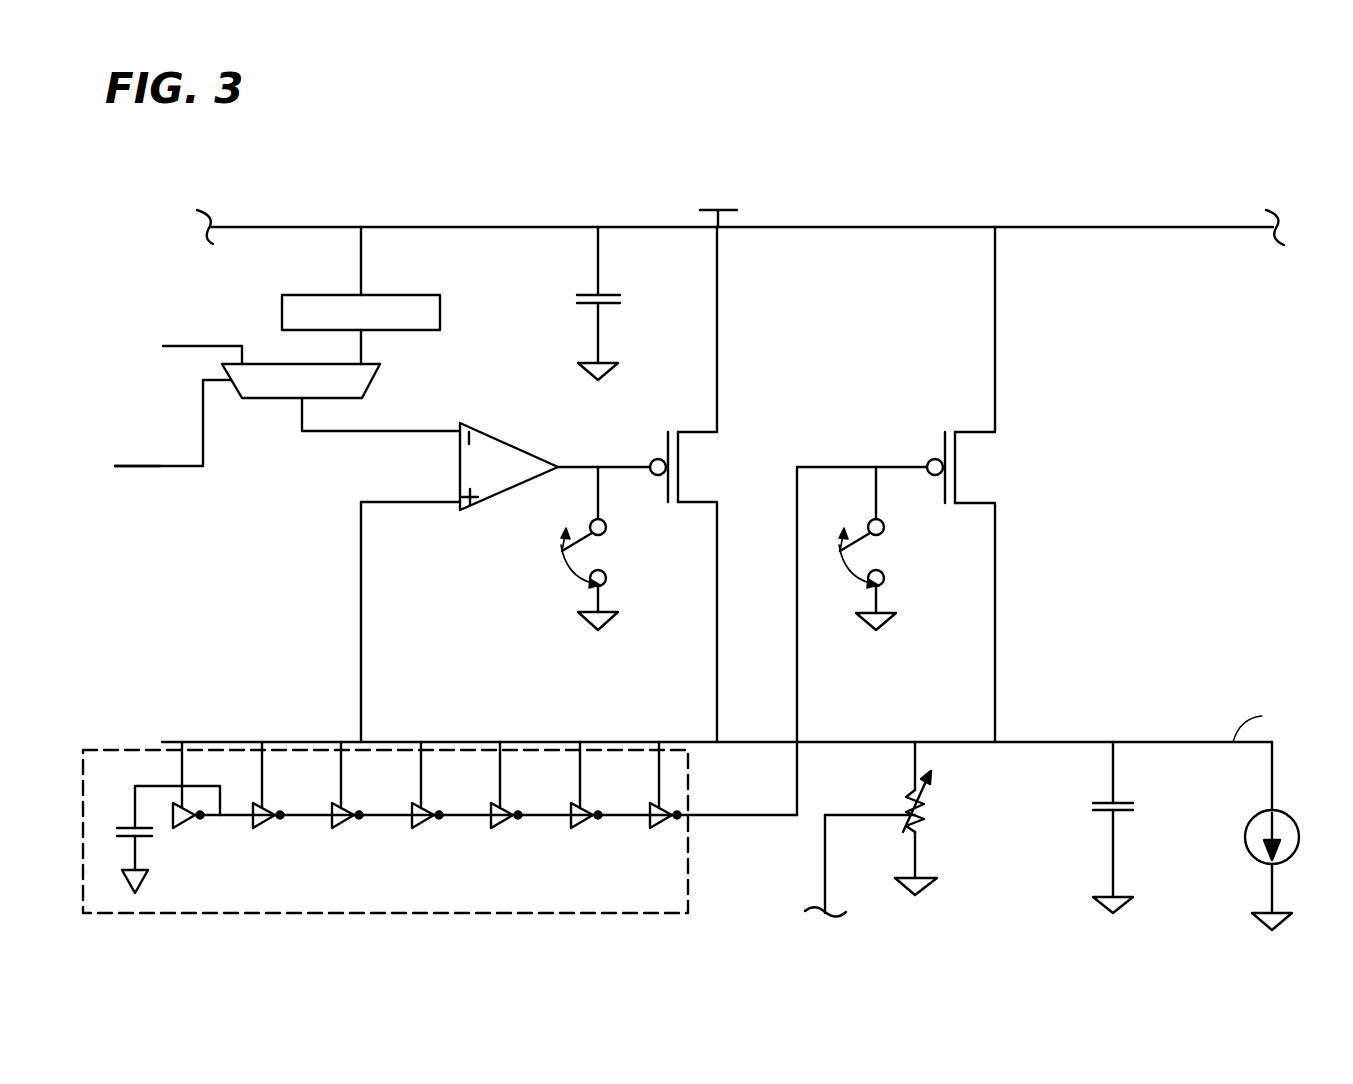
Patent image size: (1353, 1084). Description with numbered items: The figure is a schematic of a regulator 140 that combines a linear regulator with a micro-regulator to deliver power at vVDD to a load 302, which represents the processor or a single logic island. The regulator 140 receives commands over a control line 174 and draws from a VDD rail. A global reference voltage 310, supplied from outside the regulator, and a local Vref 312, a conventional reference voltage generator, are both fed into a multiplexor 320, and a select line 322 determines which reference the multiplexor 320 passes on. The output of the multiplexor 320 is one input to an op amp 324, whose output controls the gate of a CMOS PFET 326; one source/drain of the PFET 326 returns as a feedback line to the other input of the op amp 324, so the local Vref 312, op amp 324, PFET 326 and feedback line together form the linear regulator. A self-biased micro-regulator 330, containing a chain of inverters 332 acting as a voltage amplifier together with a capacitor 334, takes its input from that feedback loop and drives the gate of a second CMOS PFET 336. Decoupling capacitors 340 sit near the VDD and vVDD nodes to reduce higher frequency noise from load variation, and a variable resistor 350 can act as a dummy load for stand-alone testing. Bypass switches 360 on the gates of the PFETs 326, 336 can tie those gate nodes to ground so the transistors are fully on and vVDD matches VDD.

The regulator 140 is at (1240, 134).
The control line 174 is at (824, 850).
The load 302 is at (1263, 810).
The global reference voltage 310 is at (167, 348).
The local Vref 312 is at (400, 294).
The multiplexor 320 is at (376, 368).
The select line 322 is at (170, 470).
The op amp 324 is at (478, 432).
The CMOS PFET 326 is at (702, 431).
The micro-regulator 330 is at (140, 750).
The chain of inverters 332 is at (257, 828).
The capacitor 334 is at (145, 838).
The CMOS PFET 336 is at (977, 431).
The capacitor 340 is at (608, 295).
The variable resistor 350 is at (920, 823).
The bypass switches 360 is at (604, 535).